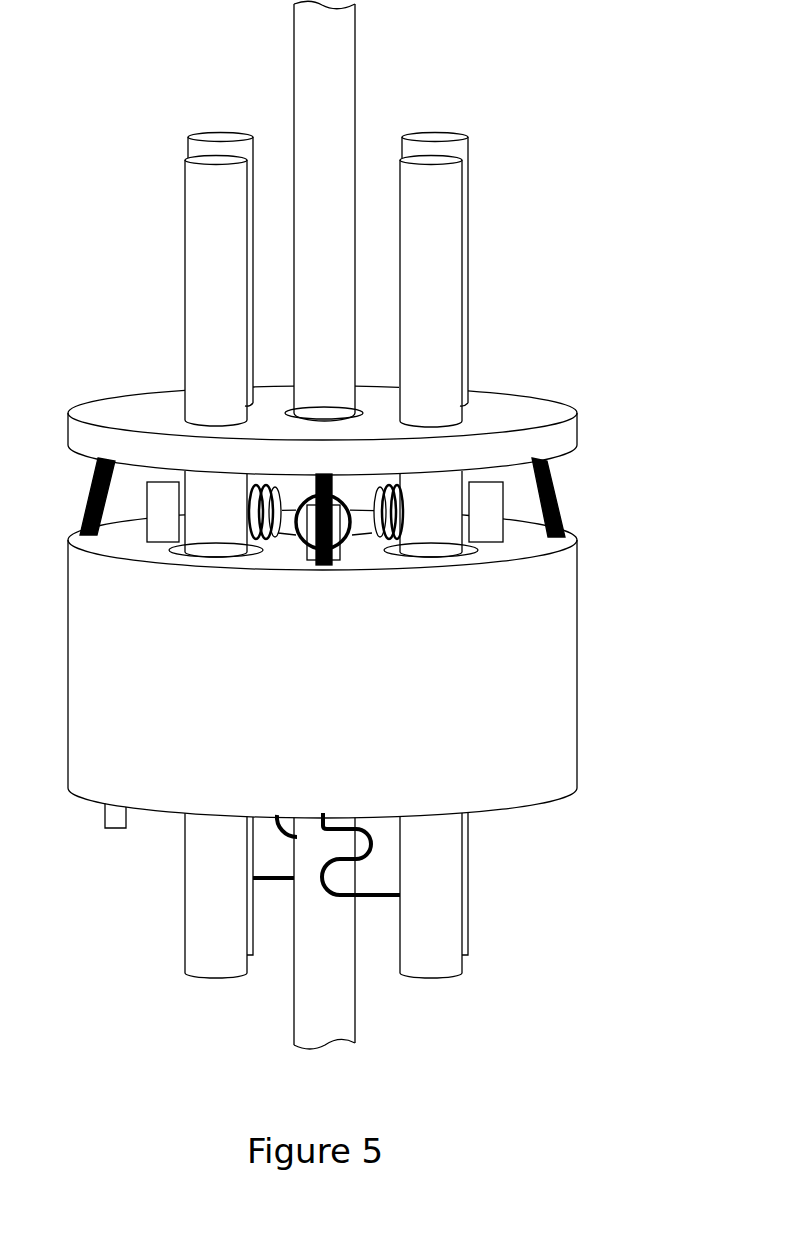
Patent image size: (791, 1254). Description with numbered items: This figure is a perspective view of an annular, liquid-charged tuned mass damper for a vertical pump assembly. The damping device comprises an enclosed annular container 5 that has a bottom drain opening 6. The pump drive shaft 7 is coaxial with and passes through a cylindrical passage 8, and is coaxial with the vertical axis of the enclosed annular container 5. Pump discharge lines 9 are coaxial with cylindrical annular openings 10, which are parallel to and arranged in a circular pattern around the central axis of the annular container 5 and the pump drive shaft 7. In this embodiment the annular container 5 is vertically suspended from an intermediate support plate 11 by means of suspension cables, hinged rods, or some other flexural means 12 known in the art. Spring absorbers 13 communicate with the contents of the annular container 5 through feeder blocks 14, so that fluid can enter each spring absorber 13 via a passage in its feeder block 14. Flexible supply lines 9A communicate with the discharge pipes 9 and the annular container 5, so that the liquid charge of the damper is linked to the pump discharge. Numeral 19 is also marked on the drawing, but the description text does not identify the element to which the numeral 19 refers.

The enclosed annular container 5 is at (578, 638).
The bottom drain opening 6 is at (104, 816).
The pump drive shaft 7 is at (294, 59).
The cylindrical passage 8 is at (364, 502).
The pump discharge lines 9 is at (185, 258).
The flexible supply lines 9A is at (377, 900).
The cylindrical annular openings 10 is at (183, 562).
The intermediate support plate 11 is at (578, 419).
The flexural means 12 is at (560, 488).
The spring absorbers 13 is at (259, 553).
The feeder blocks 14 is at (488, 543).
The bracket 19 is at (361, 573).